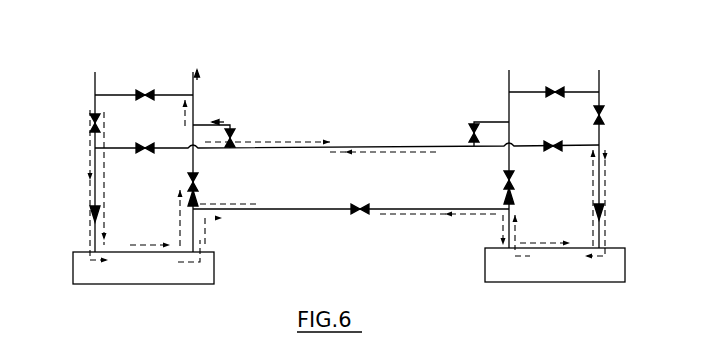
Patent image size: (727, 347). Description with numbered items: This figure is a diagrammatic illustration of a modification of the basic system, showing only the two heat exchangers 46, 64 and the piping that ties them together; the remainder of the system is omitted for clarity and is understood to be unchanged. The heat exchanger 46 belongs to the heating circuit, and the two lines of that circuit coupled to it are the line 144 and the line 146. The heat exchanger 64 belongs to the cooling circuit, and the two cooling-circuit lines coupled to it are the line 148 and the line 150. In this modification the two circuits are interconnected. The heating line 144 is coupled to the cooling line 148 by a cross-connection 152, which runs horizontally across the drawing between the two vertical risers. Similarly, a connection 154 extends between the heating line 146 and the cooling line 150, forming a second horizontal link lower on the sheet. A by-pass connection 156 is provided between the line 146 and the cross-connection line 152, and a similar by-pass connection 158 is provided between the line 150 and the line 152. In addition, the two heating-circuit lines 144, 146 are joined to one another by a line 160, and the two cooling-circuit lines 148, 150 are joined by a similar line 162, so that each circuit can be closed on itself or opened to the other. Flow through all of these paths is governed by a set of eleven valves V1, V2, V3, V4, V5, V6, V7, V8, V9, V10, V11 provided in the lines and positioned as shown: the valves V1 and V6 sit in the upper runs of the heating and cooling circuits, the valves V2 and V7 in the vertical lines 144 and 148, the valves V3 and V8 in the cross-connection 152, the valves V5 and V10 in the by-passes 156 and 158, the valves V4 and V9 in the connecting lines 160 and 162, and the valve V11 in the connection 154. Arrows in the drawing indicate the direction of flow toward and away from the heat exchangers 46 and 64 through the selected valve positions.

The line of the heating circuit 144 is at (93, 86).
The line of the heating circuit 146 is at (196, 91).
The line of the cooling circuit 148 is at (603, 92).
The line of the cooling circuit 150 is at (506, 92).
The cross-connection 152 is at (314, 147).
The connection 154 is at (322, 210).
The by-pass connection 156 is at (220, 120).
The by-pass connection 158 is at (481, 120).
The connecting line of the heating circuit 160 is at (166, 94).
The connecting line of the cooling circuit 162 is at (524, 92).
The heat exchanger 46 is at (136, 280).
The heat exchanger 64 is at (561, 276).
The valve V1 is at (141, 92).
The valve V2 is at (91, 118).
The valve V3 is at (147, 145).
The valve V4 is at (197, 182).
The valve V5 is at (234, 140).
The valve V6 is at (558, 89).
The valve V7 is at (603, 116).
The valve V8 is at (556, 136).
The valve V9 is at (505, 180).
The valve V10 is at (470, 134).
The valve V11 is at (360, 205).